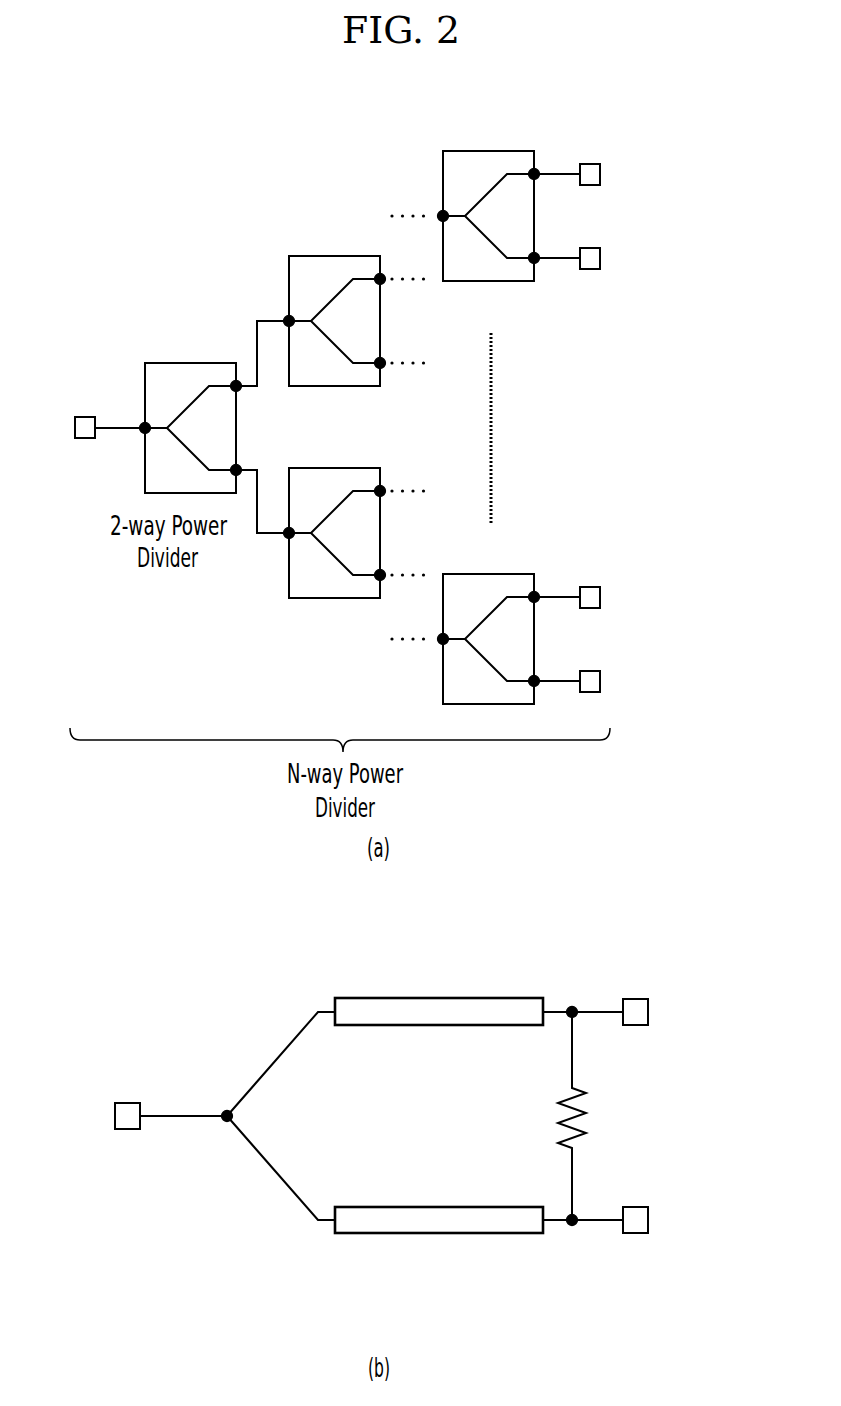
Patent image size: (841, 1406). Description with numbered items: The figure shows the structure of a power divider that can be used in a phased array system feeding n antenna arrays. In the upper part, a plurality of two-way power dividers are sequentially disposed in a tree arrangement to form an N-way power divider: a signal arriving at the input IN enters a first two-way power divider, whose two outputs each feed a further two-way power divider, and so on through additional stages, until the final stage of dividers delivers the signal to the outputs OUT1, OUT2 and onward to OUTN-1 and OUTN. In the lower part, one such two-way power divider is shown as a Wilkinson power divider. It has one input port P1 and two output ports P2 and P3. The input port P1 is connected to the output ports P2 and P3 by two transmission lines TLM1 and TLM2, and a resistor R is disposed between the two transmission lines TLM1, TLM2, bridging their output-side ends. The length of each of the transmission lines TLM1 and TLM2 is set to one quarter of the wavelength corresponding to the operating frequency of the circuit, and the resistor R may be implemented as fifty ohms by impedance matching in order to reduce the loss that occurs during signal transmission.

The input port IN is at (91, 427).
The output port 1 OUT1 is at (608, 172).
The output port 2 OUT2 is at (608, 255).
The output port N-1 OUTN-1 is at (618, 593).
The output port N OUTN is at (609, 678).
The input port P1 is at (171, 1135).
The output port P2 is at (635, 1031).
The output port P3 is at (635, 1240).
The transmission line TLM1 is at (439, 1013).
The transmission line TLM2 is at (439, 1221).
The resistor R is at (585, 1116).